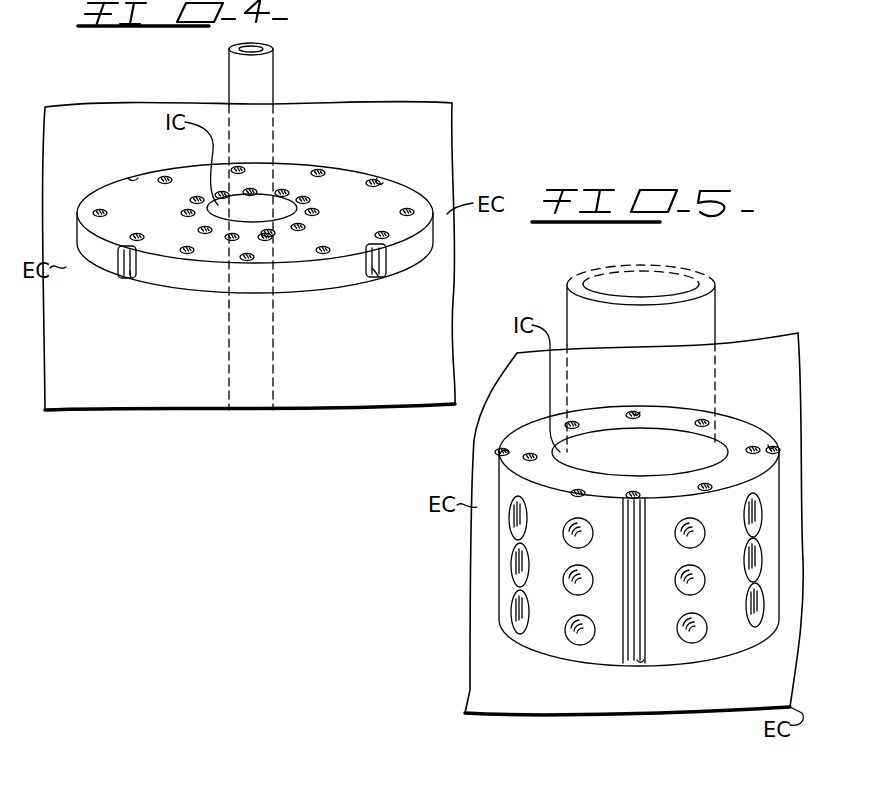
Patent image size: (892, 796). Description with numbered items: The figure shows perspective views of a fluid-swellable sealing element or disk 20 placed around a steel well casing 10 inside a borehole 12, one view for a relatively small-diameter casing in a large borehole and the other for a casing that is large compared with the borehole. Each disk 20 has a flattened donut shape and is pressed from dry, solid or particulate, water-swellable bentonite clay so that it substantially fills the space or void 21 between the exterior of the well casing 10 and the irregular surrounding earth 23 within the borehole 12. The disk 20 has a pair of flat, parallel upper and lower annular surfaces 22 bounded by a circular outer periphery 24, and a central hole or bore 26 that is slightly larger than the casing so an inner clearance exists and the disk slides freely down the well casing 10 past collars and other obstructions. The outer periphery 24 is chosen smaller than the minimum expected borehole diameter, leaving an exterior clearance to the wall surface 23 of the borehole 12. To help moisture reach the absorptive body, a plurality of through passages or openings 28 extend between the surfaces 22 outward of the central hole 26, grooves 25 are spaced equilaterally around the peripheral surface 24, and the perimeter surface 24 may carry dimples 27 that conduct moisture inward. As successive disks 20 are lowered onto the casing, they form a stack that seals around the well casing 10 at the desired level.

In FIG. 4, the well casing 10 is at (277, 90).
In FIG. 5, the well casing 10 is at (718, 307).
In FIG. 4, the borehole 12 is at (447, 141).
In FIG. 5, the borehole 12 is at (472, 540).
In FIG. 4, the annular sealing element or disk 20 is at (198, 297).
In FIG. 5, the annular sealing element or disk 20 is at (547, 665).
In FIG. 4, the space or void 21 is at (370, 120).
In FIG. 5, the space or void 21 is at (750, 356).
In FIG. 4, the upper and lower annular surfaces 22 is at (118, 200).
In FIG. 5, the upper and lower annular surfaces 22 is at (520, 440).
In FIG. 4, the earth 23 is at (460, 350).
In FIG. 5, the earth 23 is at (473, 687).
In FIG. 4, the outer periphery 24 is at (112, 270).
In FIG. 5, the outer periphery 24 is at (612, 643).
In FIG. 4, the passages or grooves 25 is at (128, 178).
In FIG. 5, the passages or grooves 25 is at (632, 412).
In FIG. 4, the central hole or bore 26 is at (287, 208).
In FIG. 5, the central hole or bore 26 is at (697, 438).
In FIG. 5, the dimples 27 is at (513, 612).
In FIG. 4, the through passages or openings 28 is at (166, 176).
In FIG. 5, the through passages or openings 28 is at (637, 414).